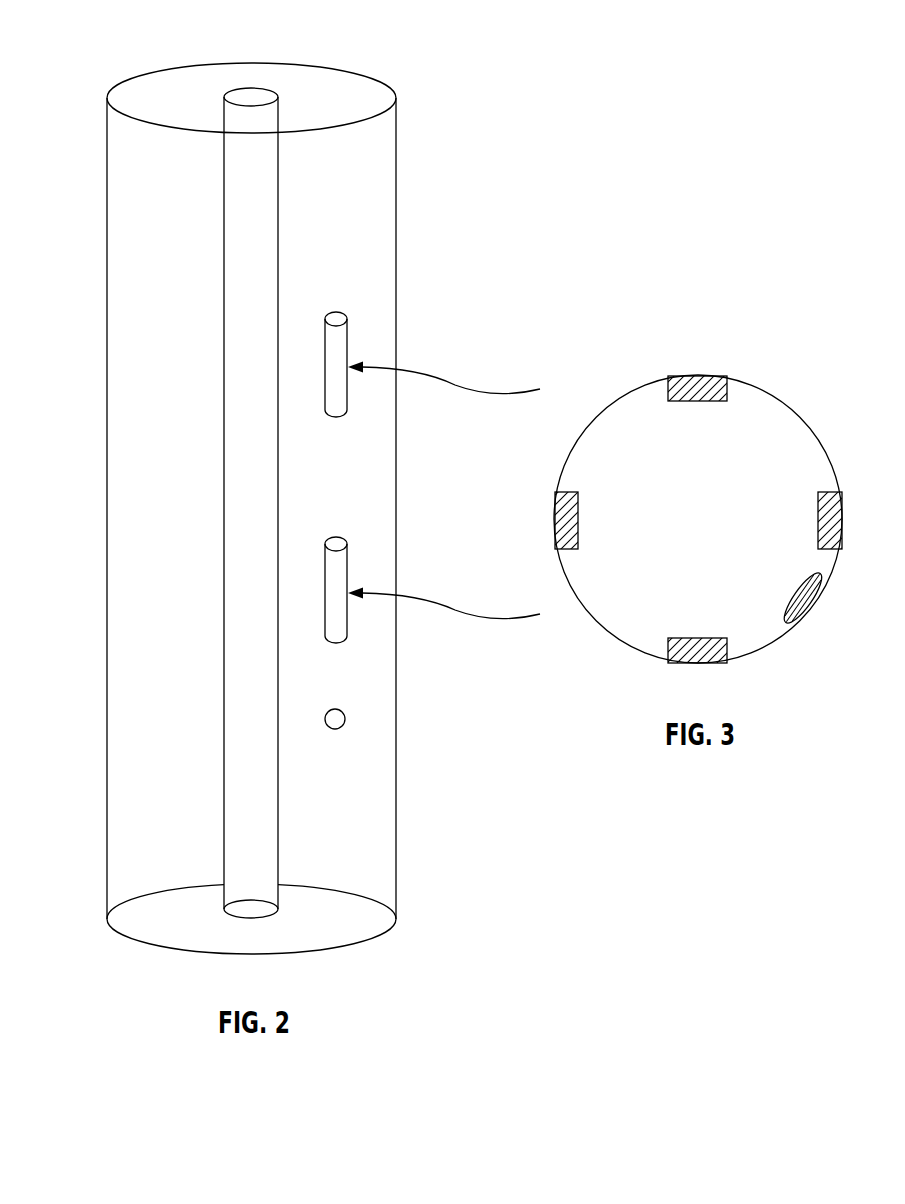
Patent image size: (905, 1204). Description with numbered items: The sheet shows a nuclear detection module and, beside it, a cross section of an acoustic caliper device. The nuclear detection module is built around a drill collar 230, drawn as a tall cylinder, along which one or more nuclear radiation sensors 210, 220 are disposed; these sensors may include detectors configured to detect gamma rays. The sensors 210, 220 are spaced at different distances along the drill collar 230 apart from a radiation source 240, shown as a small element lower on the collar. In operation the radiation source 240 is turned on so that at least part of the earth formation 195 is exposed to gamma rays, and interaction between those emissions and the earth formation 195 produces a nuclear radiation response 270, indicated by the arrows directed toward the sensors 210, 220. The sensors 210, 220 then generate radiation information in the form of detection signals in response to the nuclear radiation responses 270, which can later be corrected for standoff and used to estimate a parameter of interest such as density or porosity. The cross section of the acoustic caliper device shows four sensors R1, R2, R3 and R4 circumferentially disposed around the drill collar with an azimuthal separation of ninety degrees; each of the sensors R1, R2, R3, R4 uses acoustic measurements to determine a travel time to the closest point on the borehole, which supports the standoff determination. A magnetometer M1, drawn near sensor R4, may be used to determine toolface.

In FIG. 2, the earth formation 195 is at (480, 27).
In FIG. 2, the drill collar 230 is at (107, 263).
In FIG. 2, the nuclear radiation sensor 210 is at (347, 332).
In FIG. 2, the nuclear radiation sensor 220 is at (348, 559).
In FIG. 2, the radiation source 240 is at (345, 719).
In FIG. 2, the nuclear radiation response 270 is at (488, 393).
In FIG. 3, the acoustic sensor R1 is at (697, 637).
In FIG. 3, the acoustic sensor R2 is at (584, 520).
In FIG. 3, the acoustic sensor R3 is at (697, 404).
In FIG. 3, the acoustic sensor R4 is at (809, 520).
In FIG. 3, the magnetometer M1 is at (813, 603).